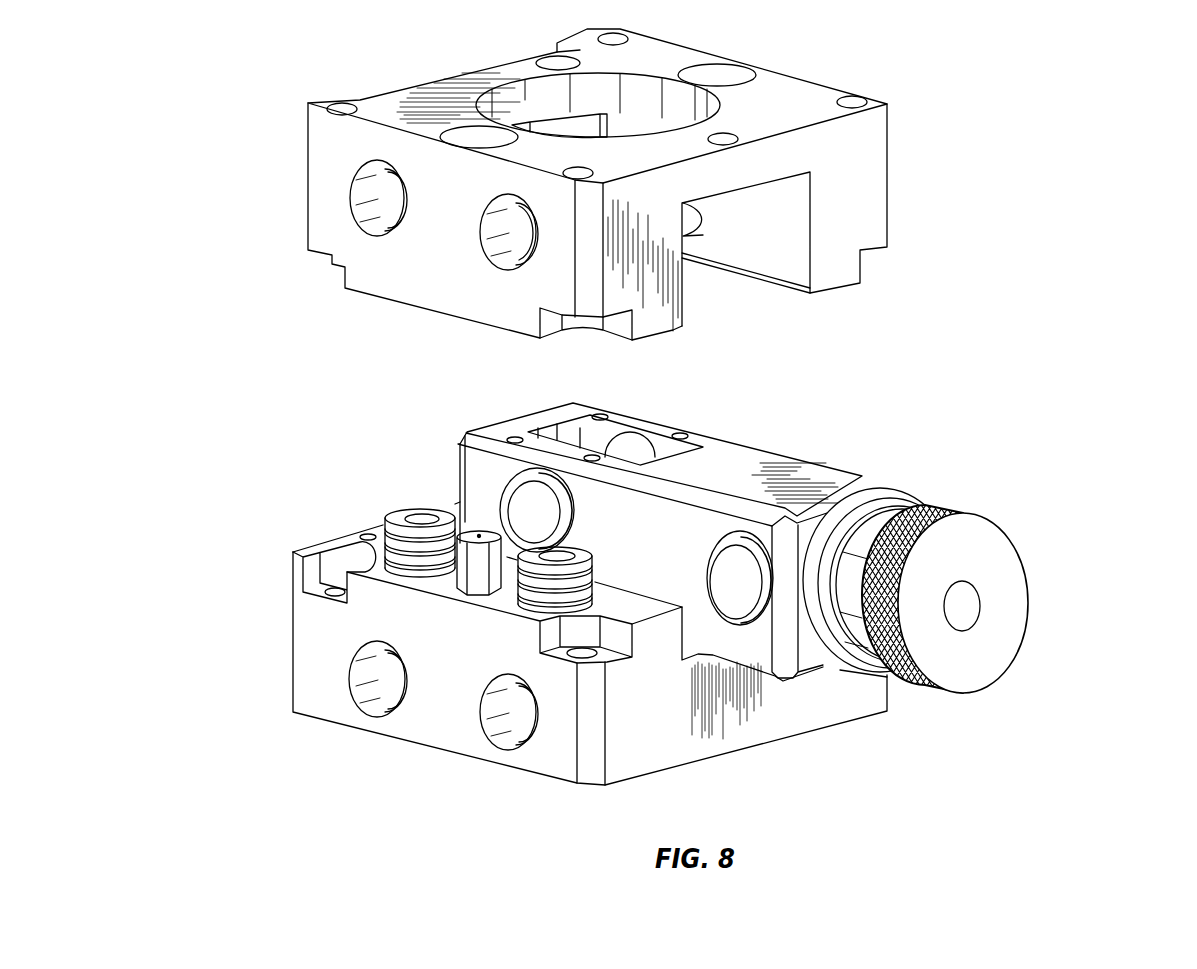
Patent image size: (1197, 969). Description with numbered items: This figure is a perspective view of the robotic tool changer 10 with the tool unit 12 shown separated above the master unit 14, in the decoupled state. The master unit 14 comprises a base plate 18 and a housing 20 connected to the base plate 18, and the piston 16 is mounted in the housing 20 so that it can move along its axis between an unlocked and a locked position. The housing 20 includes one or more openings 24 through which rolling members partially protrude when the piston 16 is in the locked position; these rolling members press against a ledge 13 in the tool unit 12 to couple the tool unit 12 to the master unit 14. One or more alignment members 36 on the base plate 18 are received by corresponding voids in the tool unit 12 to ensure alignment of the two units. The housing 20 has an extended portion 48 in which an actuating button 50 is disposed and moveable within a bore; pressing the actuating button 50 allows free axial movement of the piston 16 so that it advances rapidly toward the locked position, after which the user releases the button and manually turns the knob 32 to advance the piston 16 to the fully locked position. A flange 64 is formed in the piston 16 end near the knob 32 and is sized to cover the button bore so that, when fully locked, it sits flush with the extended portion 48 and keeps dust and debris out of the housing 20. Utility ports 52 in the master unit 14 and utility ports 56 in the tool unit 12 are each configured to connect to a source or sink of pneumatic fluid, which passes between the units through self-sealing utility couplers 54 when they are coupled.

The robotic tool changer 10 is at (1036, 318).
The tool unit 12 is at (602, 186).
The ledge 13 is at (699, 219).
The master unit 14 is at (650, 629).
The piston 16 is at (878, 520).
The base plate 18 is at (543, 663).
The housing 20 is at (624, 598).
The openings 24 is at (528, 510).
The knob 32 is at (992, 637).
The alignment members 36 is at (470, 570).
The extended portion 48 is at (786, 474).
The actuating button 50 is at (738, 592).
The utility ports 52 is at (500, 726).
The utility couplers 54 is at (398, 517).
The utility ports 56 is at (505, 241).
The flange 64 is at (850, 663).